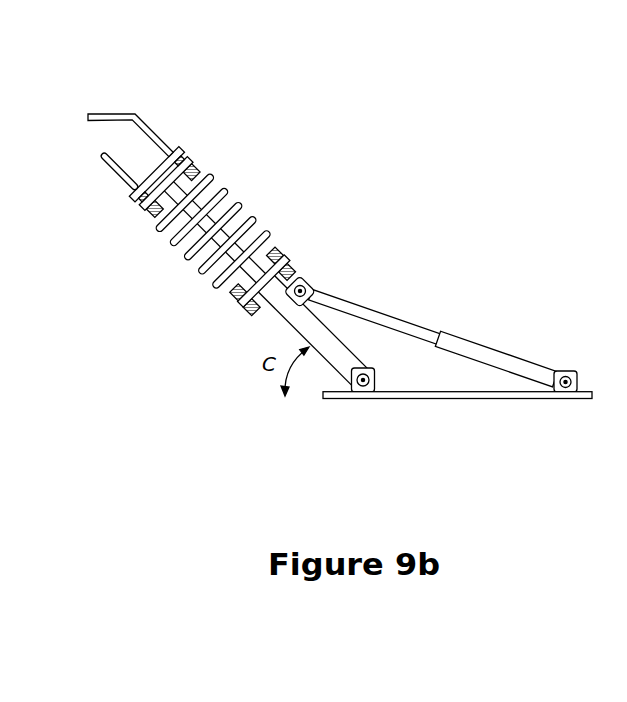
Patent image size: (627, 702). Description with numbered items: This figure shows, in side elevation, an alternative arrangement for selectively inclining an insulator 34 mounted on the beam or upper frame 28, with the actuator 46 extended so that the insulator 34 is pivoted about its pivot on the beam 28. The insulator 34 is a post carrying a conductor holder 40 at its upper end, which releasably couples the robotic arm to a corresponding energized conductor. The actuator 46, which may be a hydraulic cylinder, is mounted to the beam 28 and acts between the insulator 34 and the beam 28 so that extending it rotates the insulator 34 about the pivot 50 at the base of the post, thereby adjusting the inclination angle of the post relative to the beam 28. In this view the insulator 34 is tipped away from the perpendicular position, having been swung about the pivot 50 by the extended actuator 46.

The beam or upper frame 28 is at (460, 399).
The insulator 34 is at (241, 204).
The conductor holder 40 is at (150, 130).
The actuator 46 is at (451, 334).
The pivot block 50 is at (375, 371).